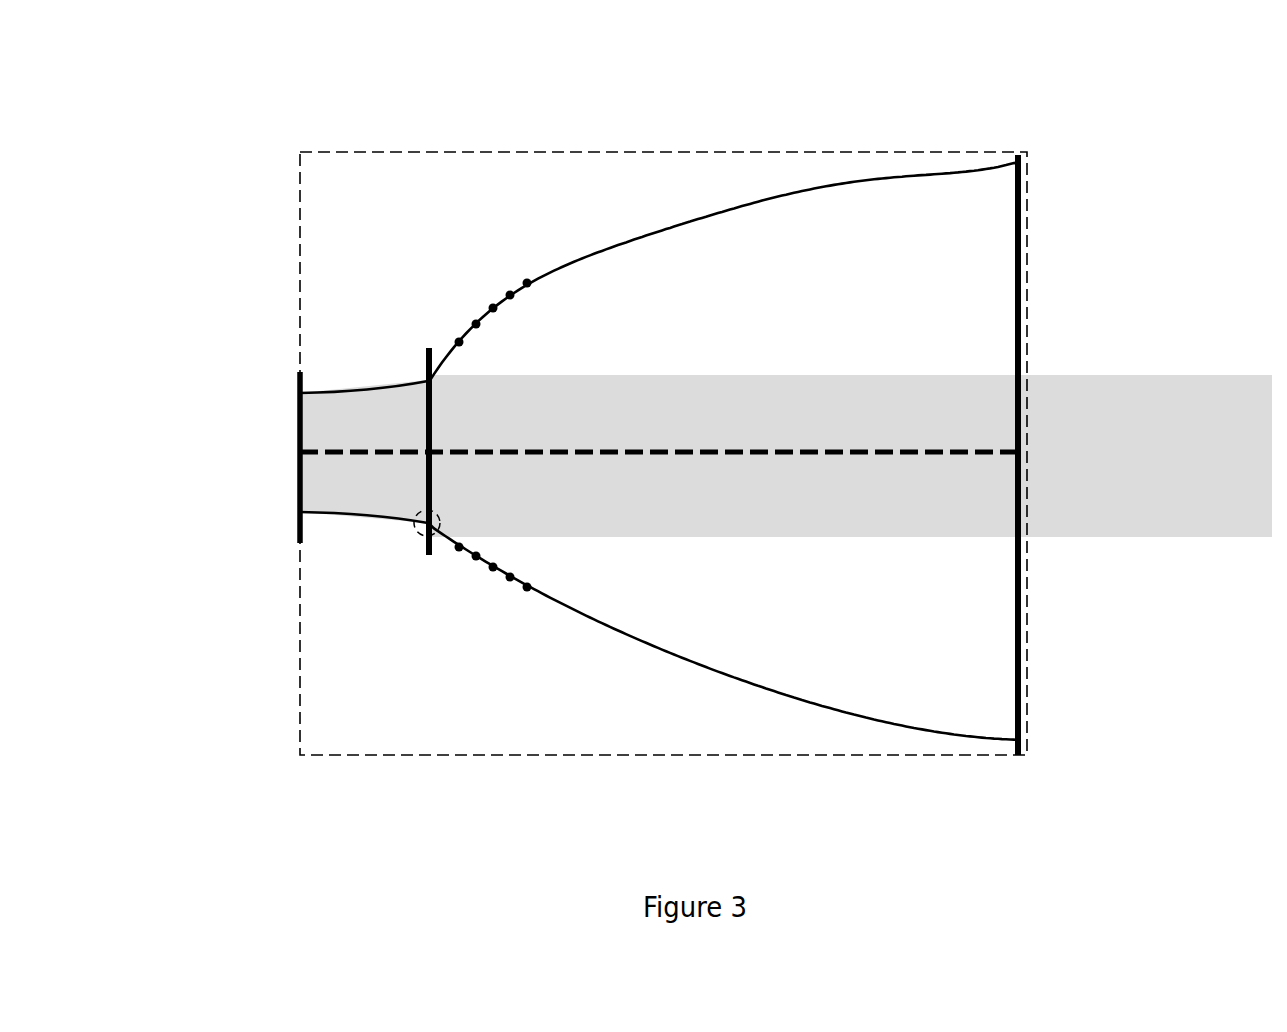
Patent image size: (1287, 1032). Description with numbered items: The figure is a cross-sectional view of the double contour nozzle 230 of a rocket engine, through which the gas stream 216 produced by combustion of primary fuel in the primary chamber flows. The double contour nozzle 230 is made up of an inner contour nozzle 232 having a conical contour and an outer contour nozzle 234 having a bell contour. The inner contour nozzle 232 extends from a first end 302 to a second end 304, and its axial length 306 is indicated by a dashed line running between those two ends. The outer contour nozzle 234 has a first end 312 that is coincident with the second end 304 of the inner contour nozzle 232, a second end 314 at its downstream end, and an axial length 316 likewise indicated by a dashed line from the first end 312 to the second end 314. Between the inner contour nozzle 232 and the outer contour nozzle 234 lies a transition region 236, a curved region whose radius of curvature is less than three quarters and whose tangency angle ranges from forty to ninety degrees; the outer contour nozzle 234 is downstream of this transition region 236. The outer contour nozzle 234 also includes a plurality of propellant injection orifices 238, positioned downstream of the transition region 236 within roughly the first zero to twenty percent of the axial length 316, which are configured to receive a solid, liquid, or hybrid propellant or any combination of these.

The gas stream 216 is at (1203, 517).
The double contour nozzle 230 is at (378, 757).
The inner contour nozzle 232 is at (345, 517).
The outer contour nozzle 234 is at (700, 216).
The transition region 236 is at (418, 537).
The propellant injection orifices 238 is at (459, 342).
The first end of inner contour nozzle 302 is at (298, 433).
The second end of inner contour nozzle 304 is at (426, 403).
The axial length of inner contour nozzle 306 is at (327, 453).
The first end of outer contour nozzle 312 is at (431, 350).
The second end of outer contour nozzle 314 is at (1021, 257).
The axial length of outer contour nozzle 316 is at (870, 455).